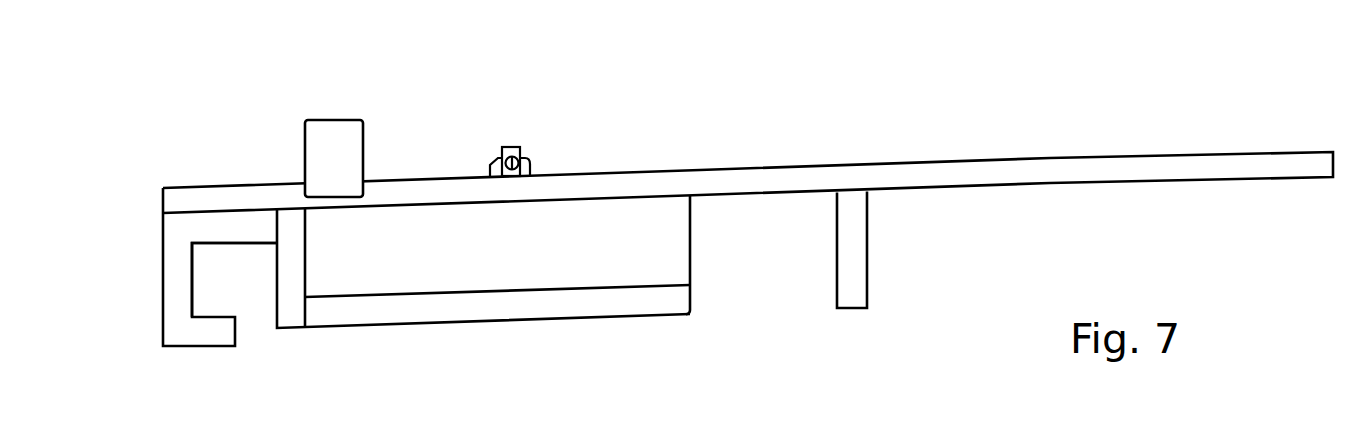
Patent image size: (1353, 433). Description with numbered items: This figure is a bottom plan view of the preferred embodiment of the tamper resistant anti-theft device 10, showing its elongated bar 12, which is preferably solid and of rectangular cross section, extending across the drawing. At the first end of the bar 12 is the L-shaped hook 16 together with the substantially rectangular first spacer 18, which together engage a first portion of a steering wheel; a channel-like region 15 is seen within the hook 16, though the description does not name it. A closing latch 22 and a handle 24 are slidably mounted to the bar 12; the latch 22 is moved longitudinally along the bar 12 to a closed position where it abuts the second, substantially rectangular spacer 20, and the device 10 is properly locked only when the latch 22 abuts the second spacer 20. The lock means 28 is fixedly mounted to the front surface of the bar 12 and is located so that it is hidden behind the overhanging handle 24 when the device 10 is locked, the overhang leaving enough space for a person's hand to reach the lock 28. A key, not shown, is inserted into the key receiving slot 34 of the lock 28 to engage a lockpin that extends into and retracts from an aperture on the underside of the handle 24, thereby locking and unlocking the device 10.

The device 10 is at (746, 224).
The elongated bar 12 is at (1022, 157).
The channel / recess in bracket 15 is at (193, 280).
The L-shaped hook 16 is at (192, 348).
The first spacer 18 is at (290, 330).
The second spacer 20 is at (868, 295).
The closing latch 22 is at (572, 313).
The handle 24 is at (348, 118).
The lock means 28 is at (520, 147).
The key receiving slot 34 is at (520, 160).